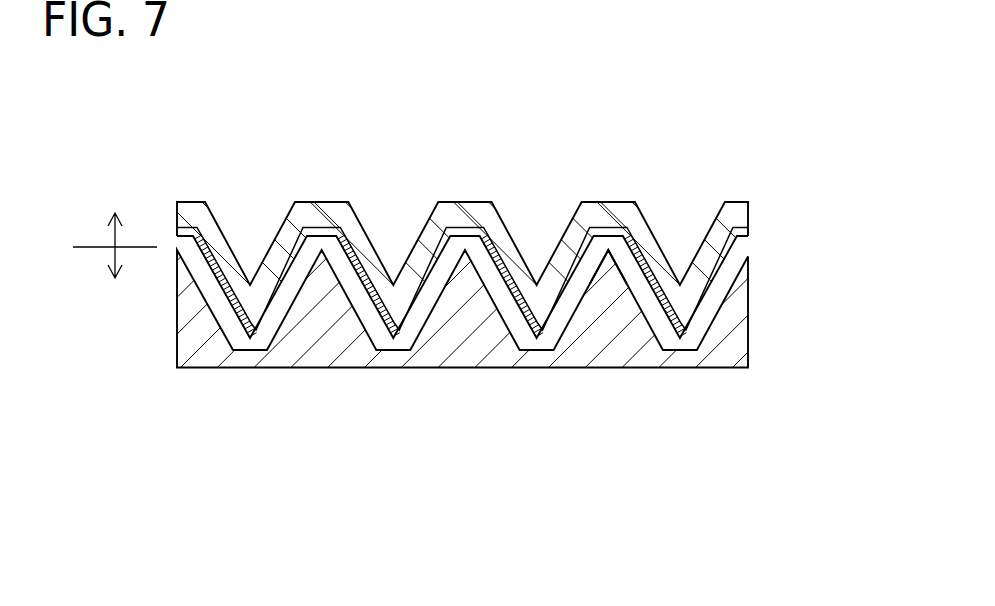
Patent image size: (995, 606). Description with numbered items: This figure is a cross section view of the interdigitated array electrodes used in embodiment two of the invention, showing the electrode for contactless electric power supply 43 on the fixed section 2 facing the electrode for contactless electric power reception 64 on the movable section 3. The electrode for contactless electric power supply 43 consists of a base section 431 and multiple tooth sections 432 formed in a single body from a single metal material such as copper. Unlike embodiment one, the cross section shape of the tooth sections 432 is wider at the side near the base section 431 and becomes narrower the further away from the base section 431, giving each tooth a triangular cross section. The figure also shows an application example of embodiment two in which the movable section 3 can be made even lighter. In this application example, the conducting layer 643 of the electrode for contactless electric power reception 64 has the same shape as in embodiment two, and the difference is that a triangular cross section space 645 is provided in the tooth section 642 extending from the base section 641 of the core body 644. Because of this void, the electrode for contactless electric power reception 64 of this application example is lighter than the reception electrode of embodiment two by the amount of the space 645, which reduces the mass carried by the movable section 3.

The fixed section 2 is at (117, 316).
The movable section 3 is at (117, 217).
The electrode for contactless electric power supply 43 is at (691, 400).
The base section 431 is at (534, 354).
The tooth section 432 is at (613, 296).
The electrode for contactless electric power reception 64 is at (647, 160).
The base section 641 is at (467, 202).
The tooth section 642 is at (527, 268).
The conducting layer 643 is at (752, 236).
The core body 644 is at (752, 206).
The triangular cross section space 645 is at (538, 228).